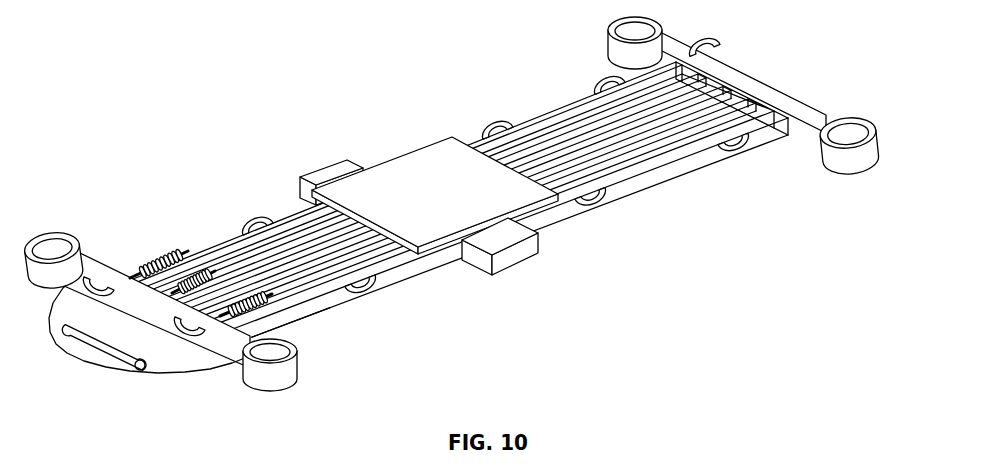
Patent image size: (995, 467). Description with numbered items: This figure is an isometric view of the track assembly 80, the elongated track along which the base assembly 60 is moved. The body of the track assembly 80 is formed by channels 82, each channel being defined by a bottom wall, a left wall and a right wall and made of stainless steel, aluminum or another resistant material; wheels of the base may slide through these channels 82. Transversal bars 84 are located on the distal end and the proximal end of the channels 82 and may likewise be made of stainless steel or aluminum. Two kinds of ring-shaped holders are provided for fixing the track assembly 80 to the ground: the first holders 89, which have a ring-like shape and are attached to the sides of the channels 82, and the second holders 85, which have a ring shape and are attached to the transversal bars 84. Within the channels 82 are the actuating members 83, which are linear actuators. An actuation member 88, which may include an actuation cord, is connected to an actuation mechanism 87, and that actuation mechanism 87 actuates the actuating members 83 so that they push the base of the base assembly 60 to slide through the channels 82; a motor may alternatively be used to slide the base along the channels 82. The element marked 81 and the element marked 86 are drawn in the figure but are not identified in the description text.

The base assembly 60 is at (381, 162).
The track assembly 80 is at (628, 195).
The front rail 81 is at (652, 180).
The channels 82 is at (588, 110).
The actuating members 83 is at (162, 257).
The transversal bars 84 is at (737, 80).
The second holders 85 is at (847, 118).
The handle tube 86 is at (118, 360).
The actuation mechanism 87 is at (513, 257).
The actuation member 88 is at (312, 330).
The first holders 89 is at (367, 293).